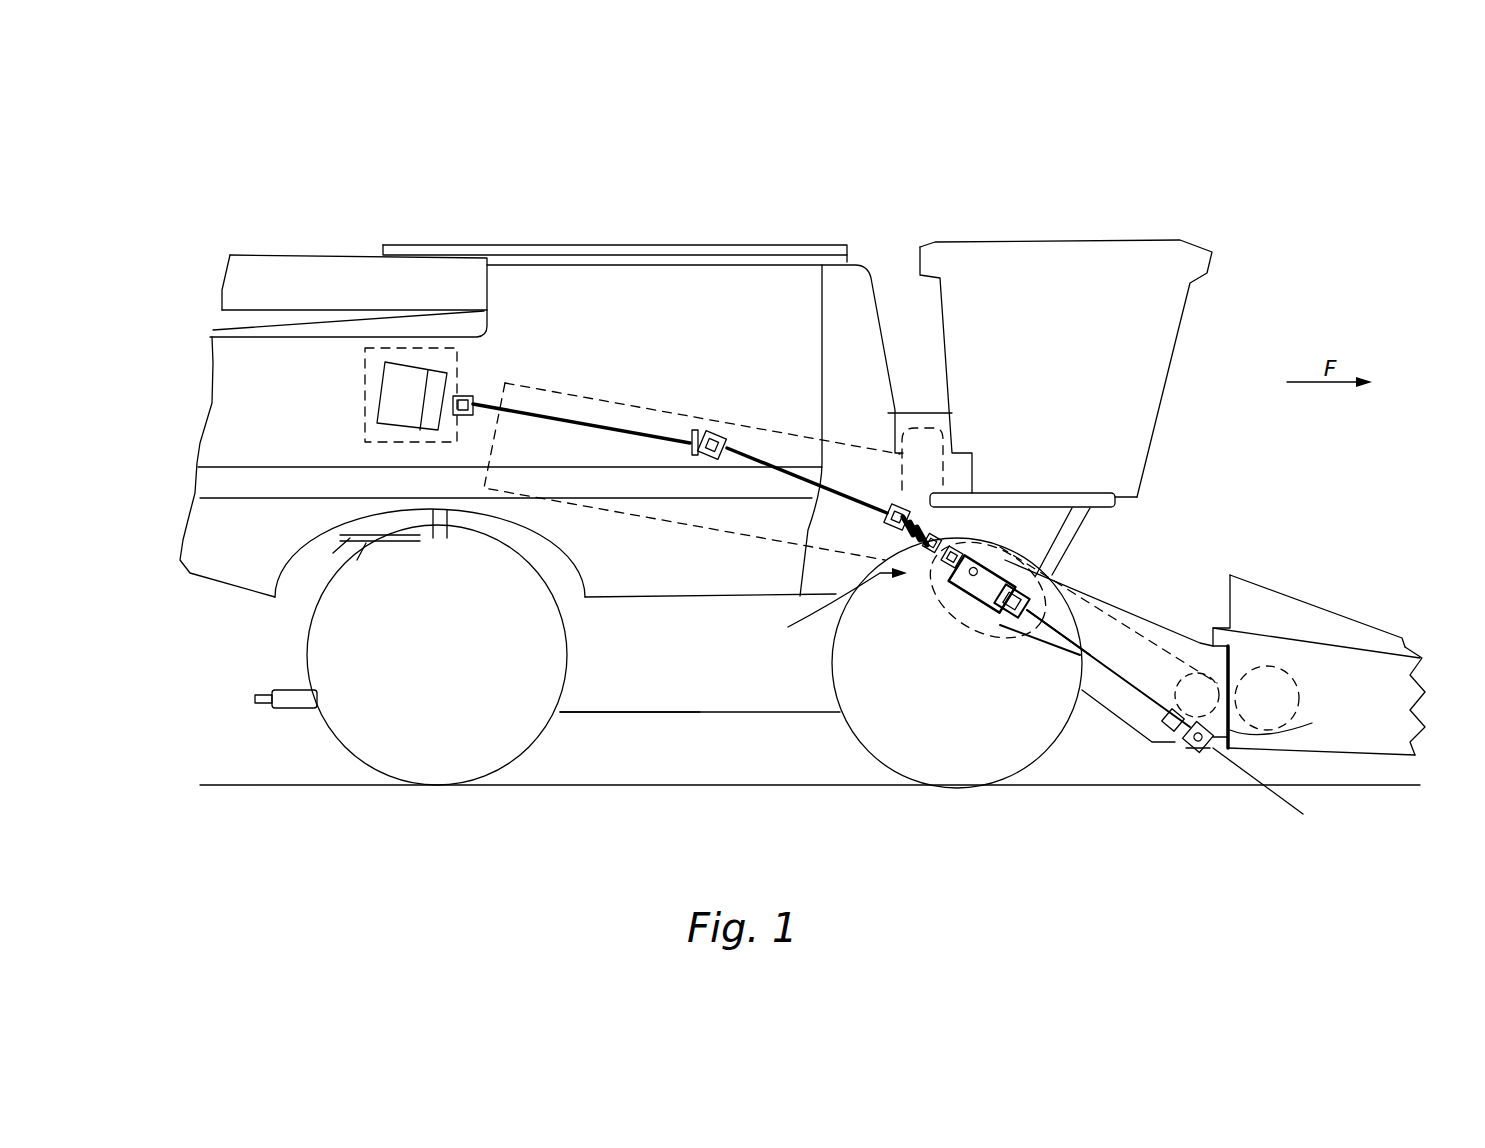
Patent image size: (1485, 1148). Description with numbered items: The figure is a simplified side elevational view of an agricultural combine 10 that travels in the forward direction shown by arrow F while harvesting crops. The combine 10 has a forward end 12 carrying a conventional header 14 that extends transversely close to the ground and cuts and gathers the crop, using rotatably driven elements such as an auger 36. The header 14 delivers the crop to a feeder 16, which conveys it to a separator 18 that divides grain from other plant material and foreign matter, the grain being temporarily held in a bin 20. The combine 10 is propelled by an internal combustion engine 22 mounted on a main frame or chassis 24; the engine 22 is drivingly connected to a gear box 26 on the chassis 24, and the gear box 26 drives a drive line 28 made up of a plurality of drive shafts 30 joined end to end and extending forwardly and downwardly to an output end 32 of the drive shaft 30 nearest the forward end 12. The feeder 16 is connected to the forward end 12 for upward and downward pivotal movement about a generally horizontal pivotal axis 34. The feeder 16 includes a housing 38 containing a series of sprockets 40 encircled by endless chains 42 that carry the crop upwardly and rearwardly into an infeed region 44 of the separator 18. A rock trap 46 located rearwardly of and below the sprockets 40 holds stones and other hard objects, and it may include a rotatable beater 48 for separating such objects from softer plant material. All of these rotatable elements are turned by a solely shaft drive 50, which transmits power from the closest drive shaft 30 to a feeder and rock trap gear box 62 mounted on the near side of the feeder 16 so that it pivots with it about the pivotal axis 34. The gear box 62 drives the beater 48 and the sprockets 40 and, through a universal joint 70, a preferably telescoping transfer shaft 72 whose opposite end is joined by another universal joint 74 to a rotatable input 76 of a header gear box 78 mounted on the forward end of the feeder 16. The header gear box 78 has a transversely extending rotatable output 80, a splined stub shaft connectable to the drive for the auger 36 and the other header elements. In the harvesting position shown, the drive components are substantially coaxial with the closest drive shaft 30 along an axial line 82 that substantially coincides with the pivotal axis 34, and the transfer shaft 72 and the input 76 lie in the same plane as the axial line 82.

The combine 10 is at (1246, 210).
The forward end 12 is at (800, 713).
The header 14 is at (1373, 617).
The feeder 16 is at (1147, 600).
The separator 18 is at (757, 424).
The bin 20 is at (572, 244).
The internal combustion engine 22 is at (365, 392).
The chassis 24 is at (620, 714).
The gear box 26 is at (418, 372).
The drive line 28 is at (669, 430).
The drive shafts 30 is at (598, 424).
The output end 32 is at (934, 534).
The pivotal axis 34 is at (957, 550).
The auger 36 is at (1290, 675).
The housing 38 is at (1180, 625).
The sprockets 40 is at (1052, 525).
The chains 42 is at (1078, 592).
The infeed region 44 is at (922, 582).
The rock trap 46 is at (962, 620).
The beater 48 is at (957, 590).
The shaft drive 50 is at (832, 603).
The feeder and rock trap gear box 62 is at (1005, 616).
The universal joint 70 is at (1060, 622).
The transfer shaft 72 is at (1138, 694).
The universal joint 74 is at (1166, 740).
The rotatable input 76 is at (1176, 748).
The header gear box 78 is at (1198, 760).
The rotatable output 80 is at (1288, 725).
The axial line 82 is at (1303, 814).